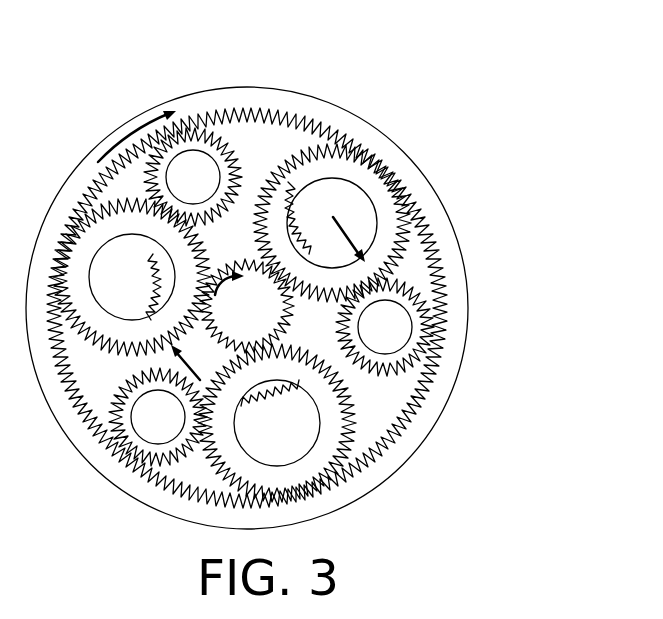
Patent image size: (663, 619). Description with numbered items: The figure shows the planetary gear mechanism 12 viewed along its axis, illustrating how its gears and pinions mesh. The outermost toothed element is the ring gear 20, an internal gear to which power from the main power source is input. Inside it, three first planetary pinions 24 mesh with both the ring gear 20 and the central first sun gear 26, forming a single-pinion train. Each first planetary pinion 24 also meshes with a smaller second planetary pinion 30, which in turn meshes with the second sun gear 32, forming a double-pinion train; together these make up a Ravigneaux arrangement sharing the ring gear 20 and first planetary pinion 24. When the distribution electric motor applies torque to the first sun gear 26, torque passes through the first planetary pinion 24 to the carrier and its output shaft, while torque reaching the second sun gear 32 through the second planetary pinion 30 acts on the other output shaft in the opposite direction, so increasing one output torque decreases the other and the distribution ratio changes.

The planetary gear mechanism 12 is at (446, 132).
The ring gear 20 is at (454, 260).
The first planetary pinion 24 is at (316, 163).
The first sun gear 26 is at (262, 308).
The second planetary pinion 30 is at (204, 142).
The second sun gear 32 is at (235, 232).